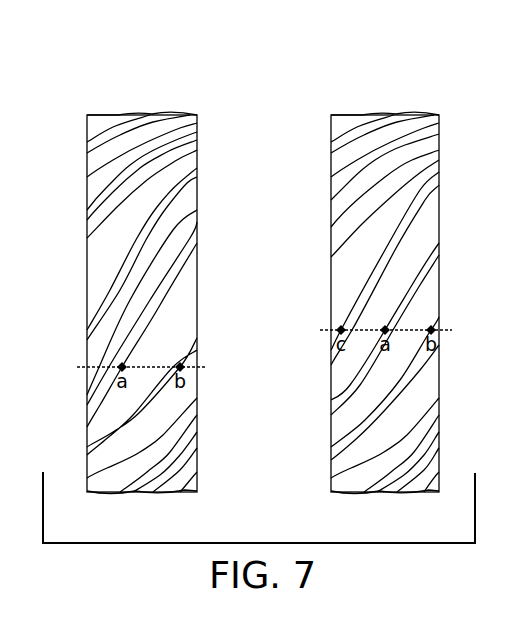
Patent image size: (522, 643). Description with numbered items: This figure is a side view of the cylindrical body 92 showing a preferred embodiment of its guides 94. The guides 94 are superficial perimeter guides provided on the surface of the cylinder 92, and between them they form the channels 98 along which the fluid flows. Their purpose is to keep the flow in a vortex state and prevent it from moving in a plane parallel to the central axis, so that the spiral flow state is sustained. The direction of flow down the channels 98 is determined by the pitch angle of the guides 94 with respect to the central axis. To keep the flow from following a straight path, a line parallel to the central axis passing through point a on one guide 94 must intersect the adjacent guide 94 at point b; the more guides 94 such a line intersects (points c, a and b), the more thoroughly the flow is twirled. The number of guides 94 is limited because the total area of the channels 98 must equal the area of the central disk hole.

The cylindrical body 92 is at (141, 86).
The guides 94 is at (192, 250).
The channels 98 is at (100, 262).